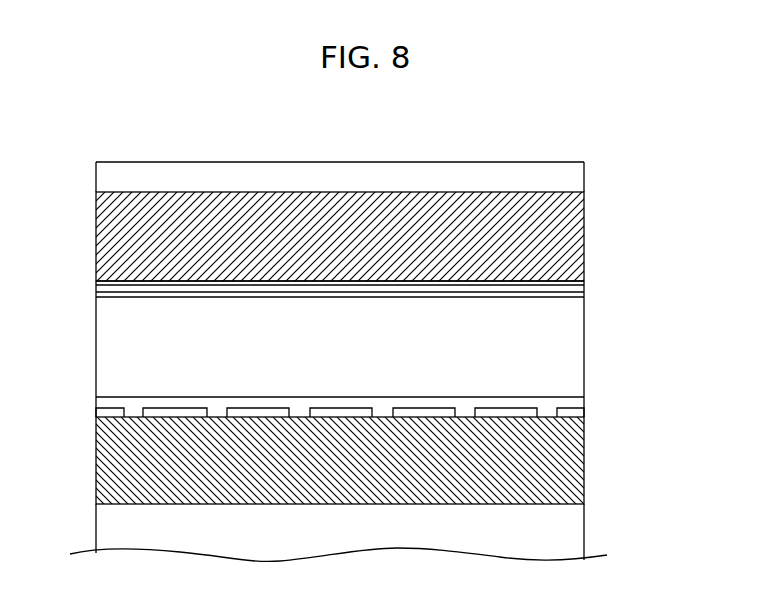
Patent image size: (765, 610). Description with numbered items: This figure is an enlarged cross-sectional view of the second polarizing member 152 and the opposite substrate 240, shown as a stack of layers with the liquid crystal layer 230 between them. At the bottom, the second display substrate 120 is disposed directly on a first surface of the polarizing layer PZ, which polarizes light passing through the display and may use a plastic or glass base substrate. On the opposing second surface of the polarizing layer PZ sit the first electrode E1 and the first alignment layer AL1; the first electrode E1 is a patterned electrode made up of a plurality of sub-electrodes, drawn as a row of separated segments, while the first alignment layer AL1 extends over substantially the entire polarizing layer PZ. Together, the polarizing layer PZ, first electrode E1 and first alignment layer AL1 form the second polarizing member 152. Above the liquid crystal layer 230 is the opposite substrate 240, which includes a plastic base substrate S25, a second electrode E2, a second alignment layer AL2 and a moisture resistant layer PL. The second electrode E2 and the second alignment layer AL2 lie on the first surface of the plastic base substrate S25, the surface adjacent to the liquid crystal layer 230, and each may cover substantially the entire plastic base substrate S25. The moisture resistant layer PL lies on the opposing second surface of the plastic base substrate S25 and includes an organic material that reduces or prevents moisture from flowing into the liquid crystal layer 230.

The moisture resistant layer PL is at (584, 175).
The plastic base substrate S25 is at (584, 230).
The second electrode E2 is at (584, 285).
The second alignment layer AL2 is at (584, 294).
The liquid crystal layer 230 is at (584, 352).
The first alignment layer AL1 is at (584, 400).
The first electrode E1 is at (584, 412).
The polarizing layer PZ is at (584, 455).
The second display substrate 120 is at (96, 527).
The opposite substrate 240 is at (650, 167).
The second polarizing member 152 is at (650, 395).